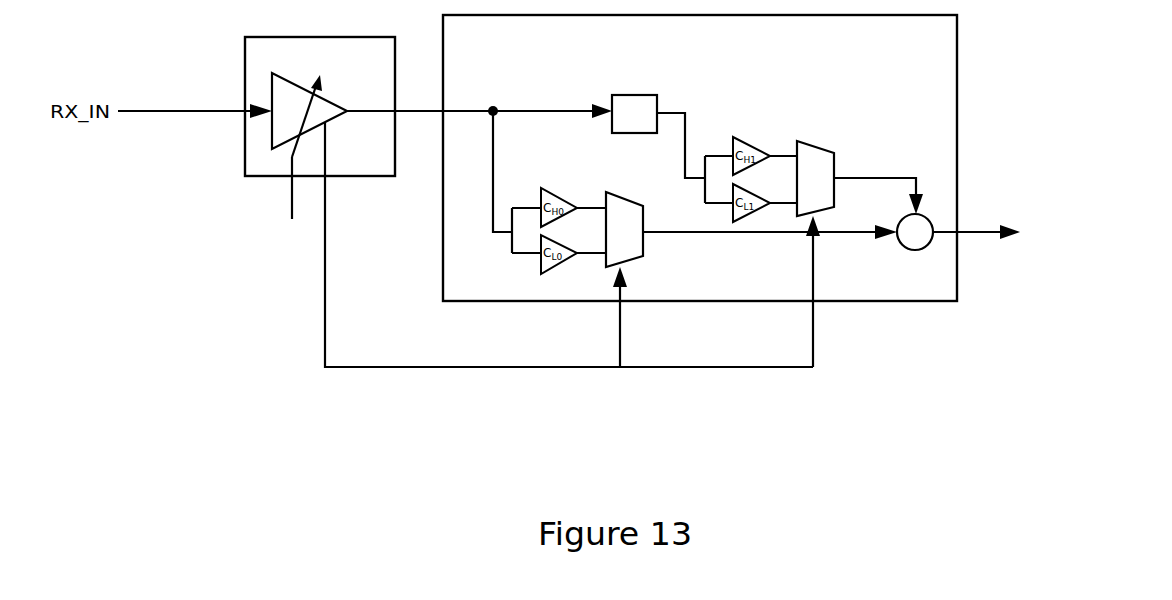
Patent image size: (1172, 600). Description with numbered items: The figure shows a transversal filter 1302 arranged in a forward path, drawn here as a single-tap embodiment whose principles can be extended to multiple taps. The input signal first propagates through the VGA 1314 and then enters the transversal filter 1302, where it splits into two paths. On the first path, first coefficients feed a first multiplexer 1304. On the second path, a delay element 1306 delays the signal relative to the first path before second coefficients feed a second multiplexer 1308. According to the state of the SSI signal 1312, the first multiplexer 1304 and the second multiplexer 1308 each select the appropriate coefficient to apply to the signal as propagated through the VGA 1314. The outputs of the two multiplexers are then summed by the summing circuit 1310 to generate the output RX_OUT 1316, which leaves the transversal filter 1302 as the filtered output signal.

The transversal filter 1302 is at (912, 303).
The first multiplexer 1304 is at (645, 242).
The delay element 1306 is at (623, 133).
The second multiplexer 1308 is at (798, 137).
The summing circuit 1310 is at (897, 239).
The SSI signal 1312 is at (405, 368).
The VGA 1314 is at (348, 173).
The output RX_OUT 1316 is at (1053, 248).